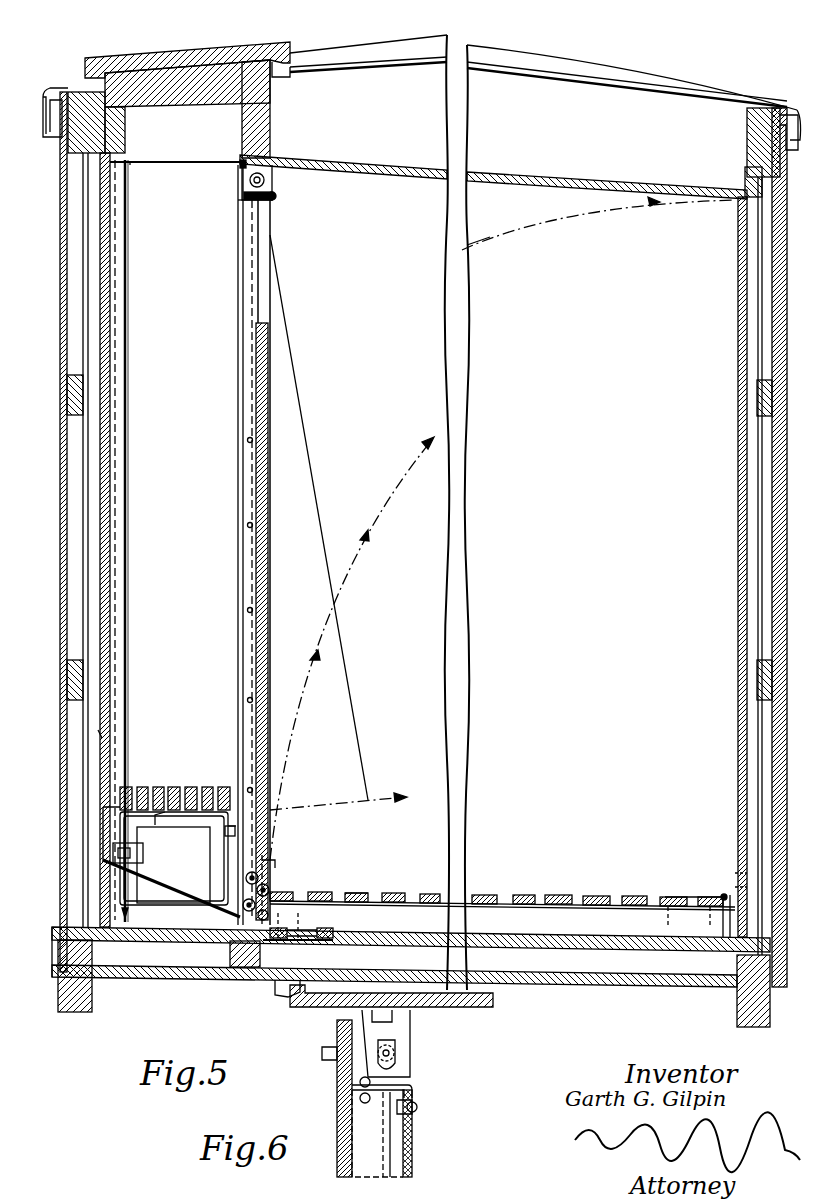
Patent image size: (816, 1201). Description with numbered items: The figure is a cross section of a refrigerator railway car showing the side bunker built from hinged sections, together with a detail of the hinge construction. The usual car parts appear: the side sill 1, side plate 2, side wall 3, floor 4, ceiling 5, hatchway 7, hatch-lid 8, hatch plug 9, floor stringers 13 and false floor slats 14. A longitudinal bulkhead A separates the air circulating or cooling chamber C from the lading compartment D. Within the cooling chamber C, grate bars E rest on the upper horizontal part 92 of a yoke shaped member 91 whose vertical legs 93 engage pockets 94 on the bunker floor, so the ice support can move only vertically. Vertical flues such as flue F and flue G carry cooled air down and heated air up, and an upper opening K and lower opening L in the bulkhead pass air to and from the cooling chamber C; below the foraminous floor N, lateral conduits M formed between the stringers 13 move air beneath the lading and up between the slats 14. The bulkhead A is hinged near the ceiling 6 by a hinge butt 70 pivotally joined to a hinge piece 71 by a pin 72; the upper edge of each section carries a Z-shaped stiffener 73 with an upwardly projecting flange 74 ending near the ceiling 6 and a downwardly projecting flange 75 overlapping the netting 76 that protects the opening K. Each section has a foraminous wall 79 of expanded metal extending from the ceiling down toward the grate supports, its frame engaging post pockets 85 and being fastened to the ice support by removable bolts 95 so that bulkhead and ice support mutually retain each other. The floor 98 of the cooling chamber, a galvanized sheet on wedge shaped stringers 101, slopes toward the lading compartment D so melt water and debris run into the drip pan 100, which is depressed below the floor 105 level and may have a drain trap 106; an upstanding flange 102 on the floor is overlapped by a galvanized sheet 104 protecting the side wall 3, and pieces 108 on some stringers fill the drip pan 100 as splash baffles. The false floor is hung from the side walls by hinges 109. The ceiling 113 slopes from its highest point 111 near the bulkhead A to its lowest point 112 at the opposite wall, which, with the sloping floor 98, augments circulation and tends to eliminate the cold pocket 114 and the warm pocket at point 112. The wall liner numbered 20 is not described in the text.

In FIG. 5, the side sill 1 is at (58, 1000).
In FIG. 5, the side plate 2 is at (62, 154).
In FIG. 5, the side wall 3 is at (62, 552).
In FIG. 5, the floor 4 is at (190, 940).
In FIG. 5, the ceiling 5 is at (683, 93).
In FIG. 5, the ceiling 6 is at (350, 166).
In FIG. 6, the ceiling 6 is at (480, 1008).
In FIG. 5, the hatchway 7 is at (180, 150).
In FIG. 5, the hatch-lid 8 is at (290, 48).
In FIG. 5, the hatch plug 9 is at (203, 90).
In FIG. 5, the floor stringers 13 is at (502, 916).
In FIG. 5, the false floor slats 14 is at (565, 896).
In FIG. 5, the inner wall 20 is at (118, 500).
In FIG. 5, the hinge butt 70 is at (268, 175).
In FIG. 6, the hinge butt 70 is at (400, 1034).
In FIG. 6, the hinge piece 71 is at (400, 1078).
In FIG. 6, the pin 72 is at (386, 1060).
In FIG. 6, the Z-shaped stiffener 73 is at (360, 1103).
In FIG. 6, the upwardly projecting flange 74 is at (337, 1035).
In FIG. 6, the downwardly projecting flange 75 is at (418, 1112).
In FIG. 6, the netting 76 is at (412, 1150).
In FIG. 5, the foraminous wall 79 is at (252, 585).
In FIG. 5, the post pockets 85 is at (270, 890).
In FIG. 5, the yoke shaped member 91 is at (203, 810).
In FIG. 5, the upper horizontal part 92 is at (155, 823).
In FIG. 5, the vertical legs 93 is at (218, 843).
In FIG. 5, the pockets 94 is at (140, 855).
In FIG. 5, the removable bolts 95 is at (240, 828).
In FIG. 5, the floor 98 is at (210, 906).
In FIG. 5, the drip pan 100 is at (300, 930).
In FIG. 5, the wedge shaped stringers 101 is at (143, 891).
In FIG. 5, the upstanding flange 102 is at (110, 851).
In FIG. 5, the galvanized sheet 104 is at (100, 736).
In FIG. 5, the floor 105 is at (515, 895).
In FIG. 5, the drain trap 106 is at (282, 986).
In FIG. 5, the pieces 108 is at (293, 940).
In FIG. 5, the hinges 109 is at (722, 892).
In FIG. 5, the highest point 111 is at (272, 166).
In FIG. 5, the lowest point 112 is at (598, 223).
In FIG. 5, the sloping ceiling 113 is at (573, 180).
In FIG. 5, the cold pocket 114 is at (287, 858).
In FIG. 5, the longitudinal bulkhead A is at (272, 386).
In FIG. 5, the air circulating chamber C is at (154, 306).
In FIG. 5, the lading compartment D is at (515, 353).
In FIG. 5, the grate bars E is at (177, 787).
In FIG. 5, the vertical flue F is at (118, 388).
In FIG. 5, the vertical flue G is at (255, 382).
In FIG. 5, the upper opening K is at (215, 290).
In FIG. 6, the upper opening K is at (372, 1158).
In FIG. 5, the lower opening L is at (200, 863).
In FIG. 5, the laterally extending conduits M is at (313, 925).
In FIG. 5, the foraminous floor N is at (355, 895).